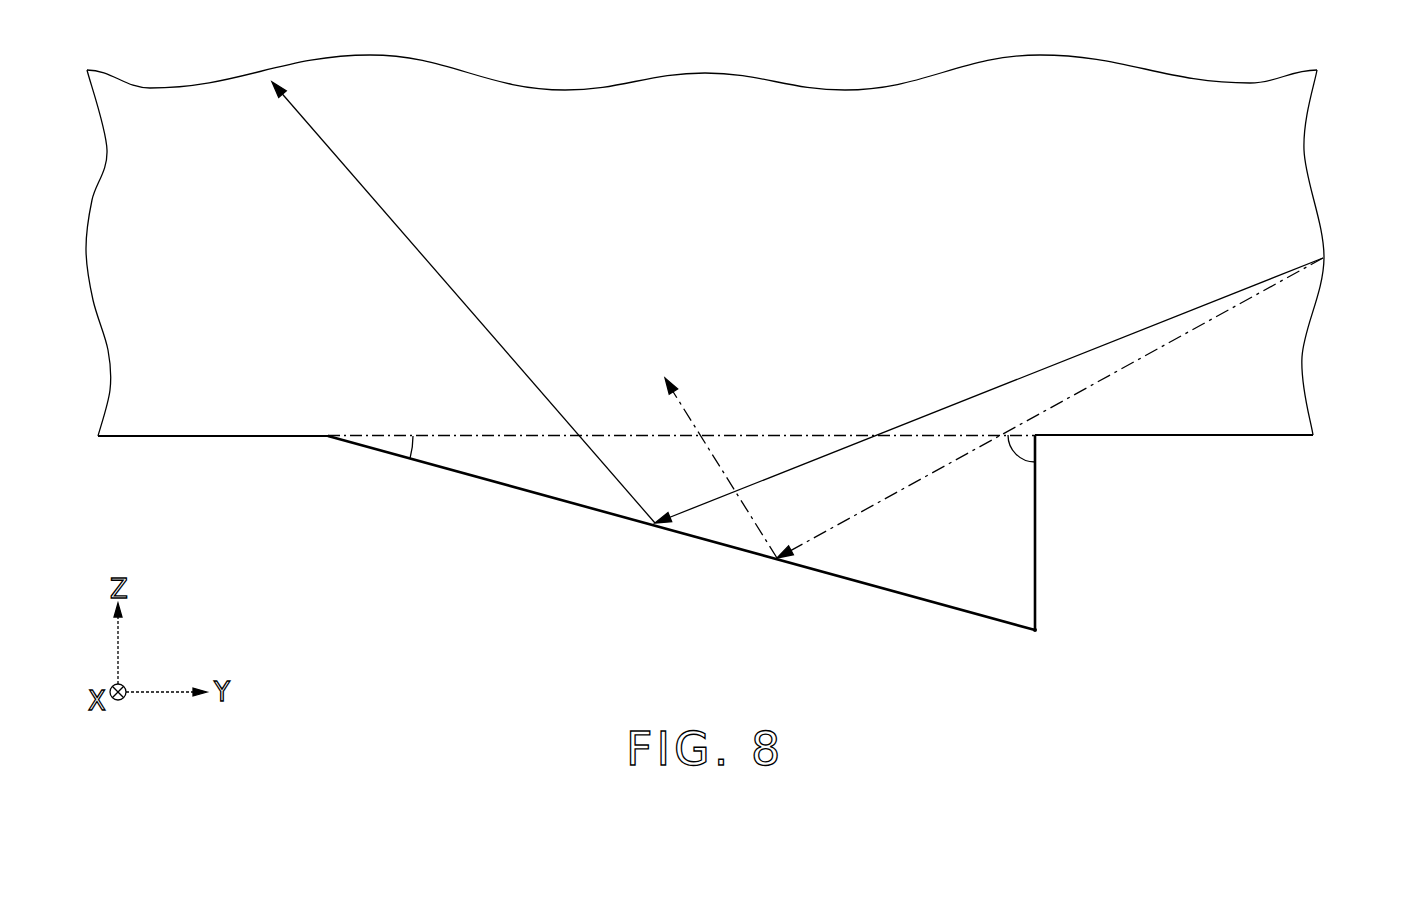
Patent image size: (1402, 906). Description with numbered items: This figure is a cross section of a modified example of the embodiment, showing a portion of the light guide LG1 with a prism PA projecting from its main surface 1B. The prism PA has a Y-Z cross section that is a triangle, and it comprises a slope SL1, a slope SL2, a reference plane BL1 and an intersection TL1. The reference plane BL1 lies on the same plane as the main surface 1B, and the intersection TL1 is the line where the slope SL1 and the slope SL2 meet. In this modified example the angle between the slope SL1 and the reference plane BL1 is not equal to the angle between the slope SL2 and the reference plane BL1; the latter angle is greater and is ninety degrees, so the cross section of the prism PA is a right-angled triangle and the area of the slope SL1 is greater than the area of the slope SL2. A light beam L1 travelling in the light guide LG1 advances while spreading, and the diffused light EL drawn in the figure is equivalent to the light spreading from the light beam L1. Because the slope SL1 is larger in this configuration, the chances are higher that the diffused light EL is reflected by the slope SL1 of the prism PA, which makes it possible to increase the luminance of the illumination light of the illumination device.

The light guide LG1 is at (1298, 164).
The main surface 1B is at (1208, 442).
The slope SL1 is at (856, 590).
The slope SL2 is at (1045, 487).
The intersection TL1 is at (1041, 640).
The prism PA is at (1075, 548).
The light beam L1 is at (989, 390).
The diffused light EL is at (1050, 408).
The reference plane BL1 is at (748, 435).